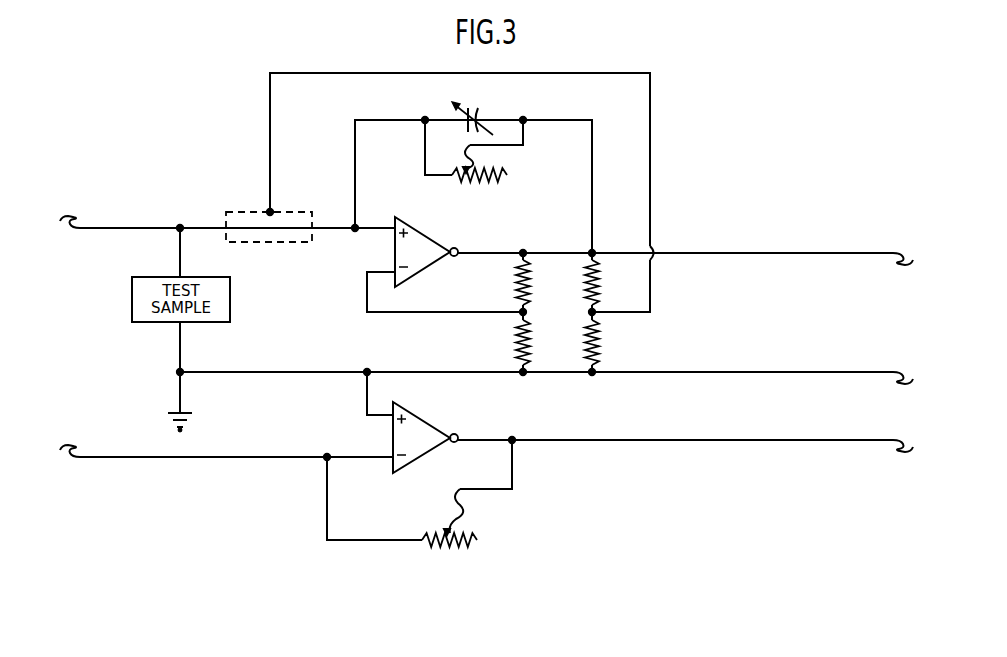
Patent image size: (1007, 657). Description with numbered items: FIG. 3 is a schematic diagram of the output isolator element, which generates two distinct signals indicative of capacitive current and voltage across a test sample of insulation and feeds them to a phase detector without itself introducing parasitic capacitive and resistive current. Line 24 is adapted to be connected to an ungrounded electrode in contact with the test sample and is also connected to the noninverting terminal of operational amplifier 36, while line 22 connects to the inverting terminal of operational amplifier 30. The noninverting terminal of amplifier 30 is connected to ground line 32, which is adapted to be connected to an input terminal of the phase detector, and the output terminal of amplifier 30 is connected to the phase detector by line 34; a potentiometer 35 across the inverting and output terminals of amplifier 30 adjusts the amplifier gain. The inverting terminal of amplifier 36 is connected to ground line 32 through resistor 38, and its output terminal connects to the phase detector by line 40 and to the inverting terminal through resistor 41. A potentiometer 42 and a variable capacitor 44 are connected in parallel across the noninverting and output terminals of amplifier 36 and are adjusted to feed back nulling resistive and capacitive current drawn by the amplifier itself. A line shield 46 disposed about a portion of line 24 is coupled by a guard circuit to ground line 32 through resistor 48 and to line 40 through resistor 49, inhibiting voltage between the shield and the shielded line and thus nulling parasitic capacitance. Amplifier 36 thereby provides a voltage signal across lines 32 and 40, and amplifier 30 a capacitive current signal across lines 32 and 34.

The line 22 is at (232, 460).
The line 24 is at (122, 225).
The operational amplifier 30 is at (430, 420).
The ground line 32 is at (713, 372).
The line 34 is at (670, 440).
The potentiometer 35 is at (477, 540).
The operational amplifier 36 is at (432, 238).
The resistor 38 is at (515, 350).
The line 40 is at (735, 253).
The resistor 41 is at (515, 290).
The potentiometer 42 is at (507, 176).
The variable capacitor 44 is at (475, 110).
The line shield 46 is at (285, 210).
The resistor 48 is at (600, 343).
The resistor 49 is at (600, 283).